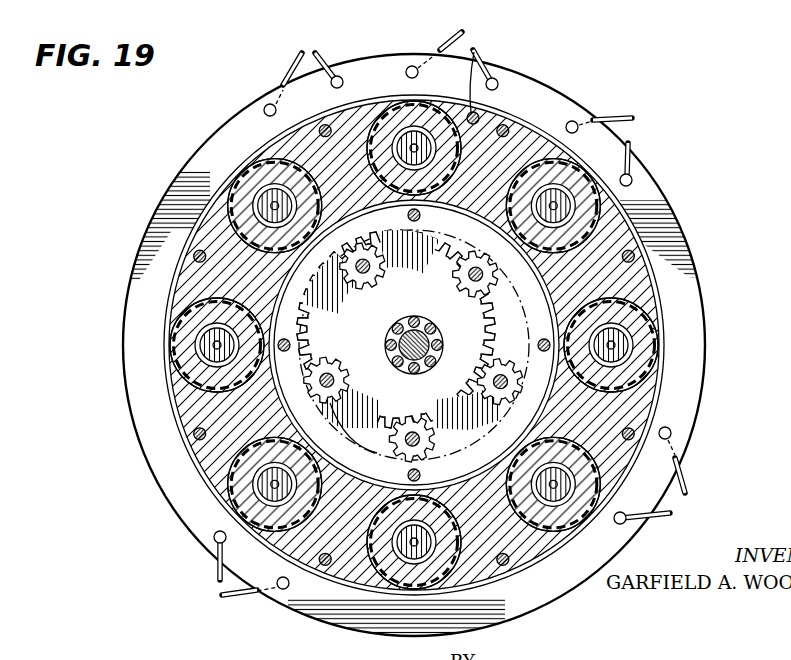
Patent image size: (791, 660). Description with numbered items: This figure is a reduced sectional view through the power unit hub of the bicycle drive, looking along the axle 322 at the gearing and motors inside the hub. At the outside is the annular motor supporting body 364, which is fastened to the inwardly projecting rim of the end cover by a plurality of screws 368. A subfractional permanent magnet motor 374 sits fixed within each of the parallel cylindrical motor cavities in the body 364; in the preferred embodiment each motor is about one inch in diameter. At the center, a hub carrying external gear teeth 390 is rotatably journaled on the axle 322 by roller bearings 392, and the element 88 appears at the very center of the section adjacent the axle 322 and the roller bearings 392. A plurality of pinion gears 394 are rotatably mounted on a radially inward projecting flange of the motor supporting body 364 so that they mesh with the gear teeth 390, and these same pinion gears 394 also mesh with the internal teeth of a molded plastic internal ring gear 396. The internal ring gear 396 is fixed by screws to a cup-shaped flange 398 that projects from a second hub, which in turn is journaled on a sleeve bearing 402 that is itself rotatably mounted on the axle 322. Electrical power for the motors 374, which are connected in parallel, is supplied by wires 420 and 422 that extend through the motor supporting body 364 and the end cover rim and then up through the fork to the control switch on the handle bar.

The shaft 88 is at (445, 312).
The axle 322 is at (398, 341).
The annular motor supporting body 364 is at (180, 287).
The screws 368 is at (506, 125).
The subfractional permanent magnet motor 374 is at (577, 182).
The external gear teeth 390 is at (342, 300).
The roller bearings 392 is at (402, 383).
The pinion gears 394 is at (481, 258).
The internal ring gear 396 is at (375, 462).
The cup-shaped flange 398 is at (348, 468).
The sleeve bearing 402 is at (407, 212).
The wire 420 is at (479, 116).
The wire 422 is at (486, 64).